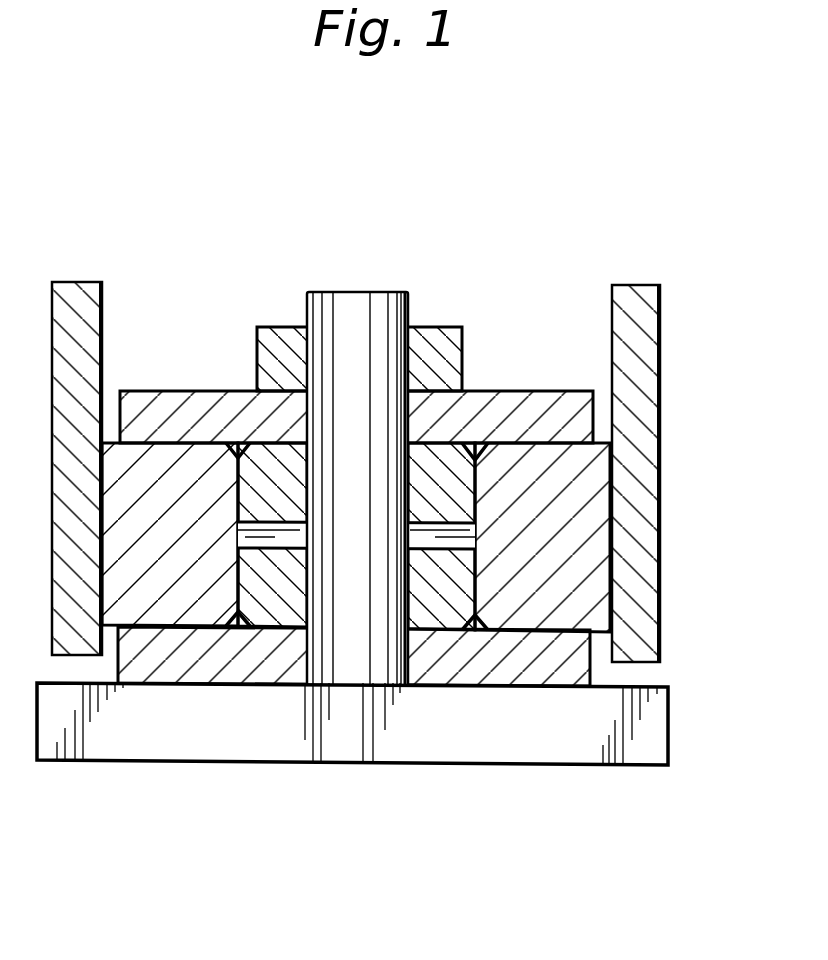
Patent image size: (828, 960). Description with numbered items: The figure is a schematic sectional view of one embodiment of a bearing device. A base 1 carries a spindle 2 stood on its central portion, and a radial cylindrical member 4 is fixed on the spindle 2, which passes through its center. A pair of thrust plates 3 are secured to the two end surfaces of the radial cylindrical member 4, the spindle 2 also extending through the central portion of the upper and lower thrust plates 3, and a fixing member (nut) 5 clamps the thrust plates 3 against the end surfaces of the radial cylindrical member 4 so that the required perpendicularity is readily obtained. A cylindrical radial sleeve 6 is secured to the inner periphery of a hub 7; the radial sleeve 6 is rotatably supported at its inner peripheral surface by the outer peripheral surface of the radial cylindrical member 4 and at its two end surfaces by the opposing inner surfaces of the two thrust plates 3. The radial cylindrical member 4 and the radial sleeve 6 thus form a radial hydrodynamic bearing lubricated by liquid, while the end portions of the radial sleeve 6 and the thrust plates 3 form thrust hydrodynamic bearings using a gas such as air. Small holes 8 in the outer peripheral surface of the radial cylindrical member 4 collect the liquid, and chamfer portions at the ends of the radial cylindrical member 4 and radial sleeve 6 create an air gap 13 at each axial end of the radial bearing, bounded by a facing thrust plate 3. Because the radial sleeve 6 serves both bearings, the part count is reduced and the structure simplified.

The base 1 is at (570, 752).
The spindle 2 is at (375, 300).
The thrust plates 3 is at (510, 400).
The radial cylindrical member 4 is at (438, 613).
The fixing member (nut) 5 is at (268, 326).
The radial sleeve 6 is at (594, 478).
The hub 7 is at (640, 316).
The small holes 8 is at (462, 535).
The air gap 13 is at (238, 452).